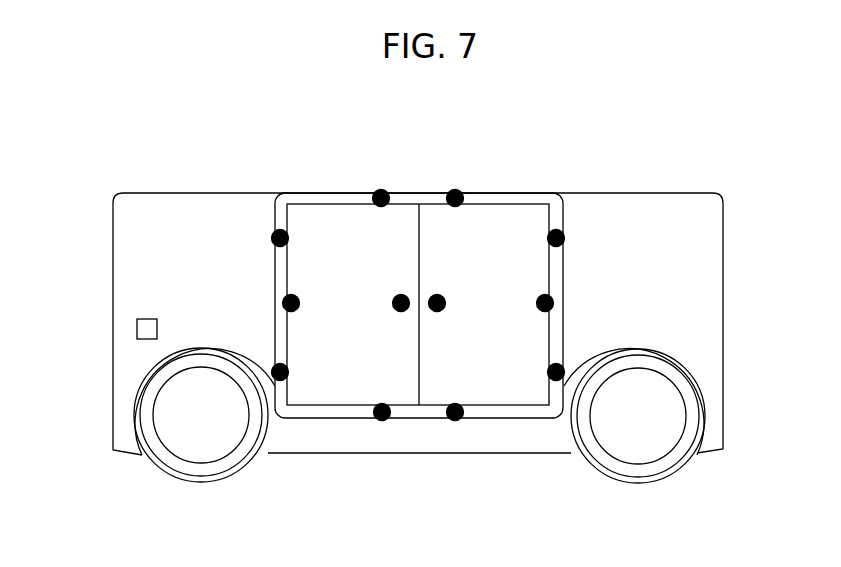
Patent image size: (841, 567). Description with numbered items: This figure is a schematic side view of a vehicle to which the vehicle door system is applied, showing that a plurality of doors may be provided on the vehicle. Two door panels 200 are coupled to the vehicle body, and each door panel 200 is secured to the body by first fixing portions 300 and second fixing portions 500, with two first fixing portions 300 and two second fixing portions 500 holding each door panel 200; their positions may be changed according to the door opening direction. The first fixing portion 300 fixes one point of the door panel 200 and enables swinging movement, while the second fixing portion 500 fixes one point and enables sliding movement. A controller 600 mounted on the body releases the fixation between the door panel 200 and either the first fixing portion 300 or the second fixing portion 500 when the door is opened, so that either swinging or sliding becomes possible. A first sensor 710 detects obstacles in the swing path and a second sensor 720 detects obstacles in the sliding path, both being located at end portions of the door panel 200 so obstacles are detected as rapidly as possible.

The door panel 200 is at (333, 212).
The first fixing portion 300 is at (272, 239).
The second fixing portion 500 is at (381, 195).
The controller 600 is at (137, 329).
The first sensor 710 is at (401, 303).
The second sensor 720 is at (286, 302).